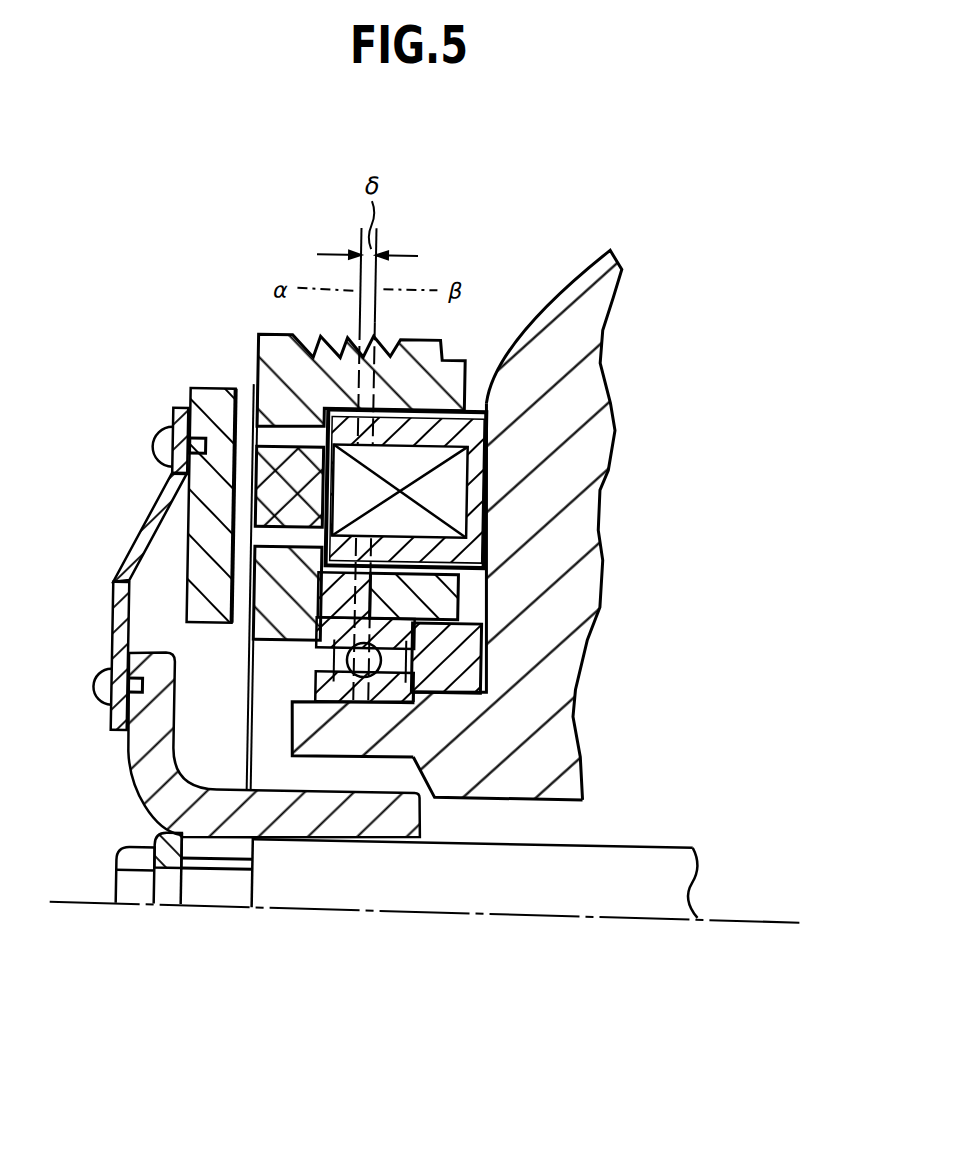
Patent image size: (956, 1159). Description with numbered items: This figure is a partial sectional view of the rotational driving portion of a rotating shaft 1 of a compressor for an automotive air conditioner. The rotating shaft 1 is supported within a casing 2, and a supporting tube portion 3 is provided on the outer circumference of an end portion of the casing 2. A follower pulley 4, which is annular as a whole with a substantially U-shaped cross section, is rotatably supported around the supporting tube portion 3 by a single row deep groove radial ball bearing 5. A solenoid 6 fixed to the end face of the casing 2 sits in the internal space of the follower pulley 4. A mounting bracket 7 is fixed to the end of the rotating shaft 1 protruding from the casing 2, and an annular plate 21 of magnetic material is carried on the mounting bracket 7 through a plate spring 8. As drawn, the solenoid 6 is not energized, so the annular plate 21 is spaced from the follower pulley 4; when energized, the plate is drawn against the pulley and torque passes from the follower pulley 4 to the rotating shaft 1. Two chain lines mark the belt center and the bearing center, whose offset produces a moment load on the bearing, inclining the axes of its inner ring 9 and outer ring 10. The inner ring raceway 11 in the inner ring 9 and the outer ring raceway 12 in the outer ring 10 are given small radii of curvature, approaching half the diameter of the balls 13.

The rotating shaft 1 is at (462, 892).
The casing 2 is at (573, 363).
The supporting tube portion 3 is at (339, 736).
The follower pulley 4 is at (262, 357).
The single row deep groove radial ball bearing 5 is at (383, 652).
The solenoid 6 is at (448, 491).
The mounting bracket 7 is at (147, 804).
The plate spring 8 is at (131, 551).
The inner ring 9 is at (427, 711).
The outer ring 10 is at (415, 616).
The inner ring raceway 11 is at (346, 667).
The outer ring raceway 12 is at (345, 652).
The balls 13 is at (382, 667).
The annular plate 21 is at (196, 520).